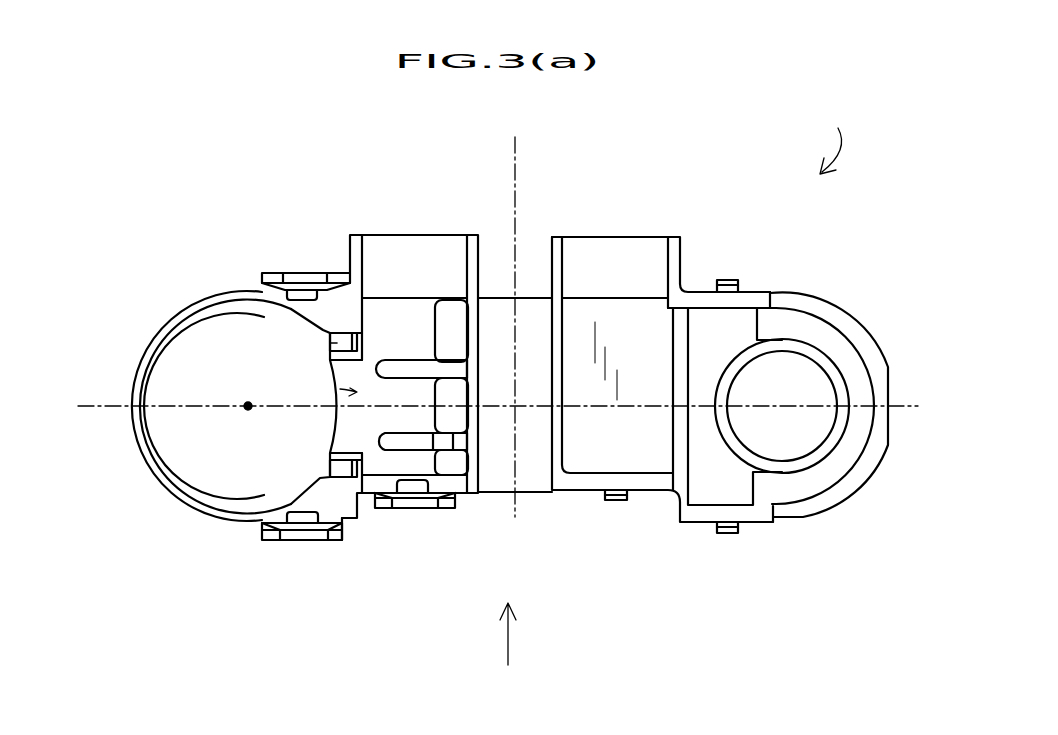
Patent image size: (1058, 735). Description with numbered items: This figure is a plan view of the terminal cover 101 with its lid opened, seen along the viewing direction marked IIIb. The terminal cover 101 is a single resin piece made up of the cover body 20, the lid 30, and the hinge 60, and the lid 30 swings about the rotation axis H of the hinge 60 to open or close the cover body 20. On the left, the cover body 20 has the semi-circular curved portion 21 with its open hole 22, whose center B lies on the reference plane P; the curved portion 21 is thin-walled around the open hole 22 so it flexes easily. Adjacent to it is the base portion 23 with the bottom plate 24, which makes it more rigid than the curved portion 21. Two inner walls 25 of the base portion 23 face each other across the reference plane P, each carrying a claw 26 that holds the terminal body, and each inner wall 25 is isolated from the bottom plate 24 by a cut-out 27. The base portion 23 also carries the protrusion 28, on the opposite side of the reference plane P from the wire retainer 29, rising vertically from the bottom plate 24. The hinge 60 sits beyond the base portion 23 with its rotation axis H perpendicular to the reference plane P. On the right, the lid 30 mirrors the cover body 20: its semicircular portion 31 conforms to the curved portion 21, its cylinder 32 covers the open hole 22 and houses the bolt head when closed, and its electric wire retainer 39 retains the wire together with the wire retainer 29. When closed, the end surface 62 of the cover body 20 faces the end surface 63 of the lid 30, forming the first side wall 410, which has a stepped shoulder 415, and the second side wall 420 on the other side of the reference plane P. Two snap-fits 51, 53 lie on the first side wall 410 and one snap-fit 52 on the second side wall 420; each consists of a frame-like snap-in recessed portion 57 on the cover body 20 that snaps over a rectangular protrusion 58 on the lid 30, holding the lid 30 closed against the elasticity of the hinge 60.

The terminal cover 101 is at (851, 142).
The cover body 20 is at (268, 406).
The curved portion 21 is at (140, 450).
The open hole 22 is at (192, 457).
The base portion 23 is at (328, 390).
The bottom plate 24 is at (240, 440).
The inner walls 25 is at (353, 341).
The claw 26 is at (333, 343).
The cut-out 27 is at (332, 355).
The protrusion 28 is at (408, 442).
The wire retainer 29 is at (423, 372).
The lid 30 is at (803, 400).
The semicircular portion 31 is at (860, 478).
The cylinder 32 is at (800, 432).
The electric wire retainer 39 is at (667, 405).
The snap-fit 51 is at (294, 553).
The snap-fit 52 is at (302, 259).
The snap-fit 53 is at (420, 523).
The snap-in recessed portion 57 is at (268, 273).
The protrusion 58 is at (728, 280).
The hinge 60 is at (533, 470).
The end surface 62 is at (338, 515).
The end surface 63 is at (680, 500).
The first side wall 410 is at (706, 525).
The shoulder 415 is at (357, 522).
The second side wall 420 is at (702, 290).
The center of the open hole B is at (245, 407).
The reference plane P is at (93, 406).
The rotation axis H is at (517, 158).
The view direction IIIb is at (508, 650).